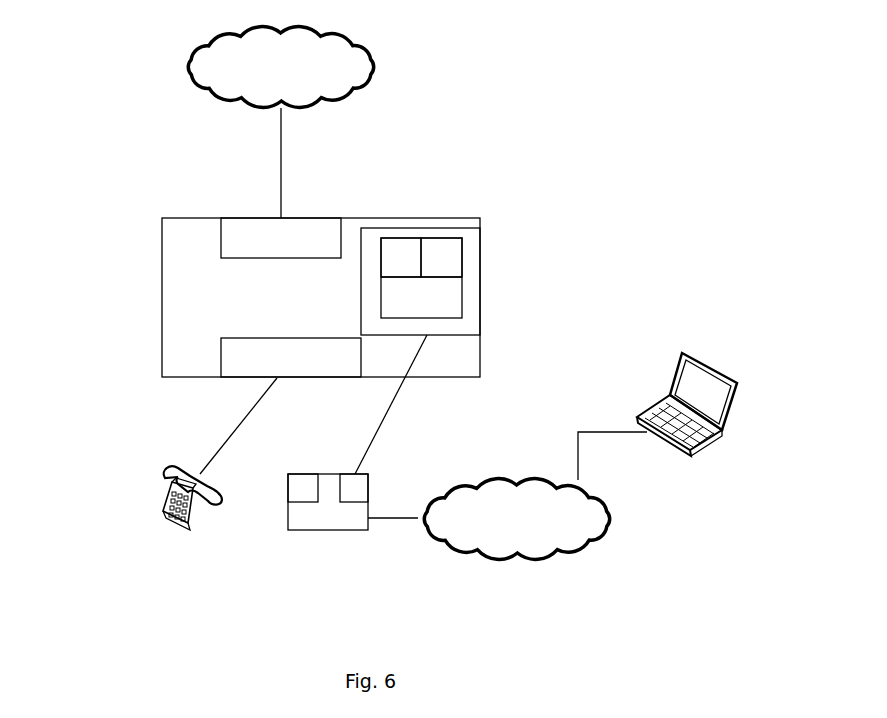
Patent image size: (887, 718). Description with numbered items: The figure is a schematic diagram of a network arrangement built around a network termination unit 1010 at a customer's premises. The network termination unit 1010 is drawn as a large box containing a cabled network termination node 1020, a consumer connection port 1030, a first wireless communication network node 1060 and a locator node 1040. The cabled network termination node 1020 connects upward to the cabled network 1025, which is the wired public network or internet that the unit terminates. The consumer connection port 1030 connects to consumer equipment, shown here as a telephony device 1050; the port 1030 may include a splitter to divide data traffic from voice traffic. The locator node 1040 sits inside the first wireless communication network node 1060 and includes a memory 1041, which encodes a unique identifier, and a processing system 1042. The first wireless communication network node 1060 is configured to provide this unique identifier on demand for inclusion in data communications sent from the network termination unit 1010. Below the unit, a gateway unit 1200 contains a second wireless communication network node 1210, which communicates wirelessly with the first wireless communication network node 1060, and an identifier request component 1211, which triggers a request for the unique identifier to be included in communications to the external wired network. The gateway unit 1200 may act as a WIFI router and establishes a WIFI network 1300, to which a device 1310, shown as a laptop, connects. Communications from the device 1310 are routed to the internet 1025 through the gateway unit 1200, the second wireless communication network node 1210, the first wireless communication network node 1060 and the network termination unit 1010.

The network termination unit 1010 is at (182, 278).
The cabled network termination node 1020 is at (260, 238).
The cabled network 1025 is at (320, 78).
The consumer connection port 1030 is at (281, 358).
The locator node 1040 is at (421, 298).
The memory 1041 is at (402, 257).
The processing system 1042 is at (441, 258).
The telephony device 1050 is at (195, 505).
The first wireless communication network node 1060 is at (472, 288).
The gateway unit 1200 is at (328, 530).
The second wireless communication network node 1210 is at (349, 490).
The identifier request component 1211 is at (302, 483).
The WIFI network 1300 is at (527, 530).
The device 1310 is at (678, 425).